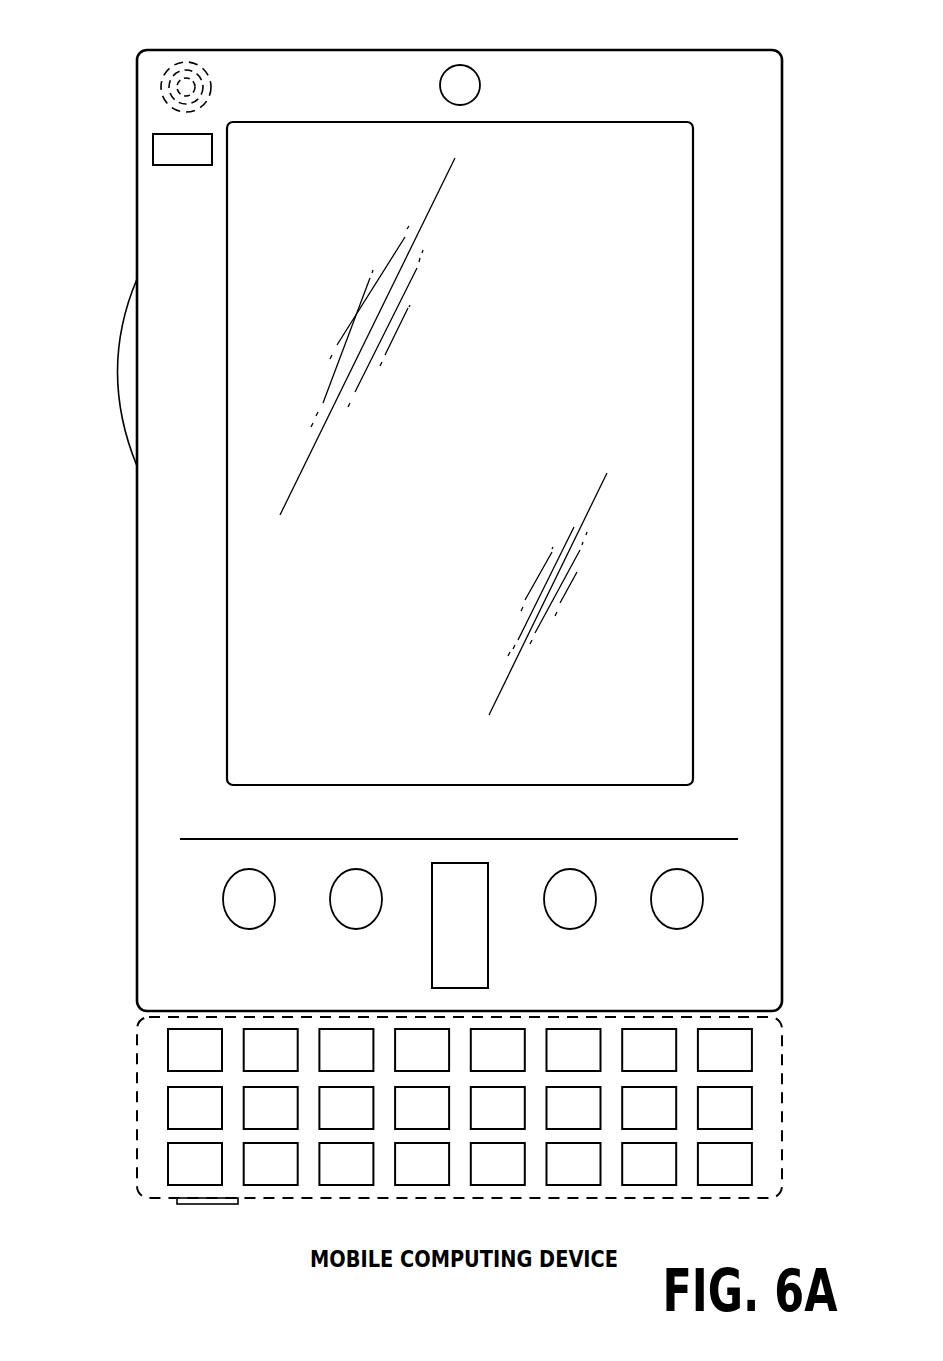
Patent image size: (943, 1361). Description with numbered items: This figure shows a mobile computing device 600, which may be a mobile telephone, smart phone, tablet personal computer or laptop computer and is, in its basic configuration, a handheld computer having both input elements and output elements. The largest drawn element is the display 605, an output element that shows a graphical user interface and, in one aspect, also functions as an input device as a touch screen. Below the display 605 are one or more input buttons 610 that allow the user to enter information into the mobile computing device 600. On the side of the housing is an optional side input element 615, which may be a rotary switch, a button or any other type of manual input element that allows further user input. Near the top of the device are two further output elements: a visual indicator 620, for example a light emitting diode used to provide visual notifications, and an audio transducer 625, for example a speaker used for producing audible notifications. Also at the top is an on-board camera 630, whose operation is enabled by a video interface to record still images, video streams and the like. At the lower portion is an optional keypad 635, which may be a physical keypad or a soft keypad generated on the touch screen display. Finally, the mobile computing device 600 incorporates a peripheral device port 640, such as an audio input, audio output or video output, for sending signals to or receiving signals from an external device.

The mobile computing device 600 is at (750, 50).
The display 605 is at (249, 622).
The input buttons 610 is at (250, 928).
The side input element 615 is at (116, 373).
The visual indicator 620 is at (153, 148).
The audio transducer 625 is at (155, 88).
The on-board camera 630 is at (460, 65).
The keypad 635 is at (148, 1106).
The peripheral device port 640 is at (187, 1205).